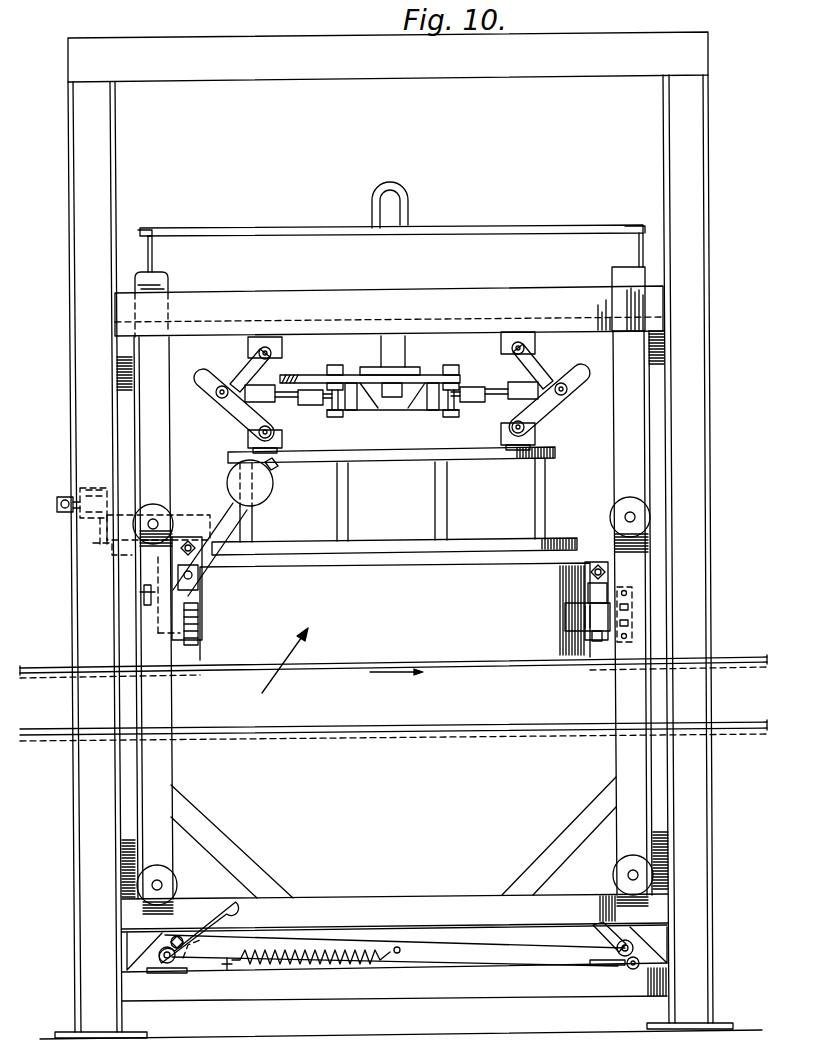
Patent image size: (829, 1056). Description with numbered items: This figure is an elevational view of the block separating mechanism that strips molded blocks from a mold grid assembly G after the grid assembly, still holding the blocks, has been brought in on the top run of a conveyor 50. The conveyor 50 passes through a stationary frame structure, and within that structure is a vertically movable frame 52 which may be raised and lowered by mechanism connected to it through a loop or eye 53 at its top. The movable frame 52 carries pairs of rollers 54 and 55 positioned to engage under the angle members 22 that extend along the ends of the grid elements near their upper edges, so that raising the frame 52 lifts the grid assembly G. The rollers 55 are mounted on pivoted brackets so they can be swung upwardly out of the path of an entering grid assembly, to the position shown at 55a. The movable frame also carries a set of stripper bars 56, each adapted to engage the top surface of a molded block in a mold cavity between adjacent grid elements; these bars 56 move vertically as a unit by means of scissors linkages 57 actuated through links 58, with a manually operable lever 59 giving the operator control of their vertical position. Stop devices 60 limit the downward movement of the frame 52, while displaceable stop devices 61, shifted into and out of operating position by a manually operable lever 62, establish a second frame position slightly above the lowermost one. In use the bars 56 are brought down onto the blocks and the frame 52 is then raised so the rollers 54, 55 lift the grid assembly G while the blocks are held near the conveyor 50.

The angle members 22 is at (205, 598).
The conveyor 50 is at (405, 734).
The vertically movable frame 52 is at (150, 415).
The loop or eye 53 is at (408, 197).
The rollers 54 is at (598, 642).
The rollers 55 is at (192, 646).
The swung-up position of rollers 55a is at (103, 555).
The bars 56 is at (370, 540).
The scissors linkages 57 is at (240, 421).
The links 58 is at (291, 400).
The manually operable lever 59 is at (298, 374).
The stop devices 60 is at (130, 943).
The displaceable stop devices 61 is at (190, 970).
The manually operable lever 62 is at (222, 906).
The grid assembly G is at (283, 670).